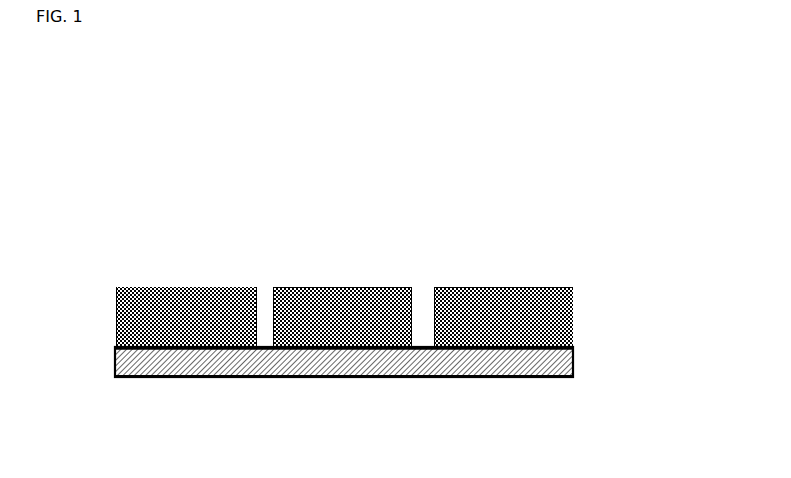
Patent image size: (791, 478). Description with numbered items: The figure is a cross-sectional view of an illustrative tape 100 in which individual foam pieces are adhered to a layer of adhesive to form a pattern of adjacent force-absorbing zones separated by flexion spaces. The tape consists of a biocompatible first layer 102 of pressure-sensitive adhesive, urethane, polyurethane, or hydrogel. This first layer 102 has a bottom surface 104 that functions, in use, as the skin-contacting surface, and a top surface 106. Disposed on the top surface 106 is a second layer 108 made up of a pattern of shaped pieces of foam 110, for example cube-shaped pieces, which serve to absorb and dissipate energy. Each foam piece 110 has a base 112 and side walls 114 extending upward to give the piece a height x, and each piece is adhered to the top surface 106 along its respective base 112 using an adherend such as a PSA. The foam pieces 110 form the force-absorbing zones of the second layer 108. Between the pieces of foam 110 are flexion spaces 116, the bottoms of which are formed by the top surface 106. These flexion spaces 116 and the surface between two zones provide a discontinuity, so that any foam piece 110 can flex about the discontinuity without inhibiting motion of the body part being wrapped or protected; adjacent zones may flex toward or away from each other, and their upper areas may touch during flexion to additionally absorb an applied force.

The tape 100 is at (264, 189).
The first layer 102 is at (612, 365).
The bottom surface 104 is at (180, 374).
The top surface 106 is at (266, 350).
The second layer 108 is at (578, 287).
The shaped pieces of foam 110 is at (358, 284).
The base 112 is at (146, 349).
The side walls 114 is at (114, 320).
The flexion spaces 116 is at (423, 313).